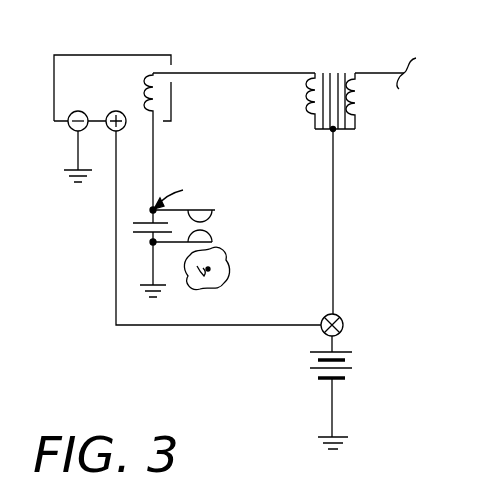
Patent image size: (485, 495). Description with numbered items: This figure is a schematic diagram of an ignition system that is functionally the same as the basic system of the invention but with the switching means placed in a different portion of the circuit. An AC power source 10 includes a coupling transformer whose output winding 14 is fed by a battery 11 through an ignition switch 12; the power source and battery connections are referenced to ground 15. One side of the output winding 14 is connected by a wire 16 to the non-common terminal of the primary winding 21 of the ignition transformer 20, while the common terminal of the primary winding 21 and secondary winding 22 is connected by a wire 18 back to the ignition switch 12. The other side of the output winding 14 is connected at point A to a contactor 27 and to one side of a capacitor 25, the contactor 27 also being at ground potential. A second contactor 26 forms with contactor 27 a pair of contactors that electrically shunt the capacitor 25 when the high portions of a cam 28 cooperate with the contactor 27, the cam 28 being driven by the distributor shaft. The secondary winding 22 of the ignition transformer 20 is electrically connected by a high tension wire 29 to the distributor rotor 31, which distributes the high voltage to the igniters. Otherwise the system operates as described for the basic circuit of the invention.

The AC power source 10 is at (102, 96).
The battery 11 is at (348, 354).
The ignition switch 12 is at (343, 330).
The output winding 14 is at (162, 99).
The ground 15 is at (68, 170).
The wire 16 is at (233, 72).
The wire 18 is at (334, 172).
The ignition transformer 20 is at (336, 64).
The primary winding 21 is at (307, 104).
The secondary winding 22 is at (358, 105).
The capacitor 25 is at (150, 210).
The contactor 26 is at (214, 212).
The contactor 27 is at (214, 241).
The cam 28 is at (229, 270).
The high tension wire 29 is at (371, 73).
The rotor 31 is at (444, 79).
The connection point A is at (192, 193).